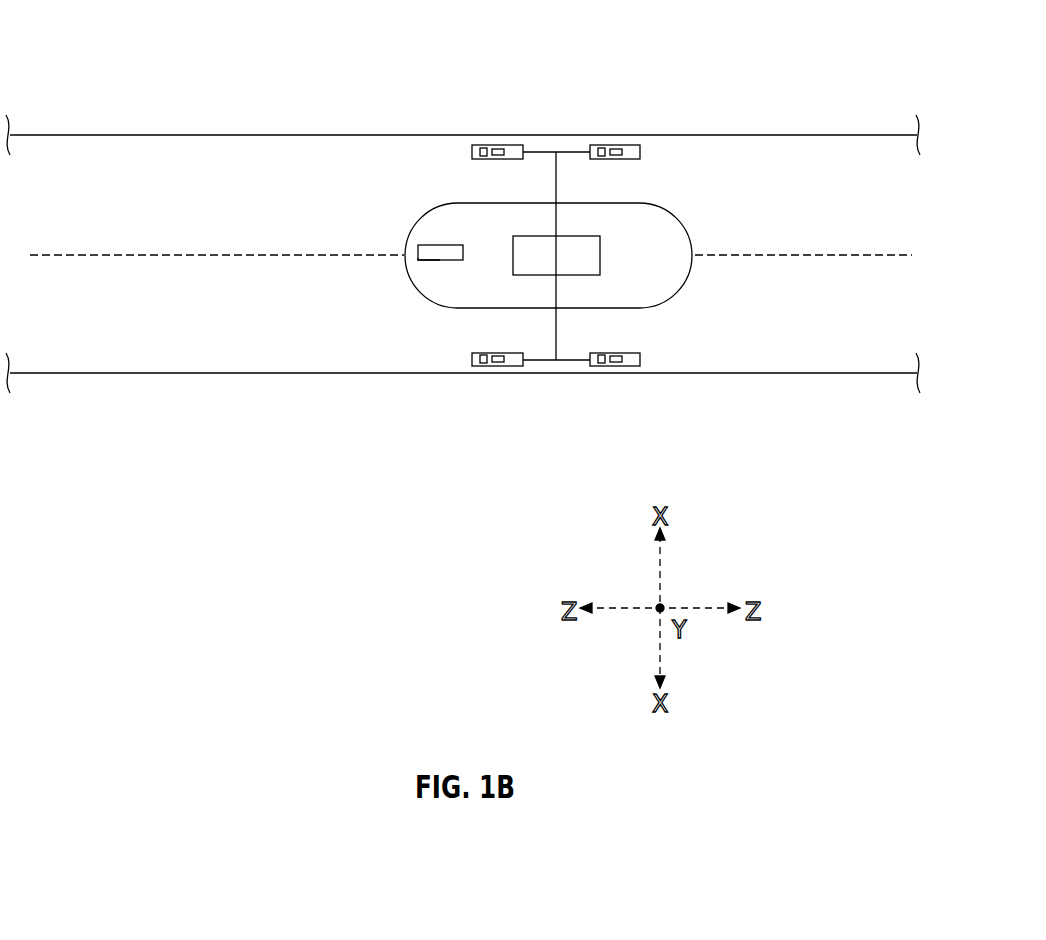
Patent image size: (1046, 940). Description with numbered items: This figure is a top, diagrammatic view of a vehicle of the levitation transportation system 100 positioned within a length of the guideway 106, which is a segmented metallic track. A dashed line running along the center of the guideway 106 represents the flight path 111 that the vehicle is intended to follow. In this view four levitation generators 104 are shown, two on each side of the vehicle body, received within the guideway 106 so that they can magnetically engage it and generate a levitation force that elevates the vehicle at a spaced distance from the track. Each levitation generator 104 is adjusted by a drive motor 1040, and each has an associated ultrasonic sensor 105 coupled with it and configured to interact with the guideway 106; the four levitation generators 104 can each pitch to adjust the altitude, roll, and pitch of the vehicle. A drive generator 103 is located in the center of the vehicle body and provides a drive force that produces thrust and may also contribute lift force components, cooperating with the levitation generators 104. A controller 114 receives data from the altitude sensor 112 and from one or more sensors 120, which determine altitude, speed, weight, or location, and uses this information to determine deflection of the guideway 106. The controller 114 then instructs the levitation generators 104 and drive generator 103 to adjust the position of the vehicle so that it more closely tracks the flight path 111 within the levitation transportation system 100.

The levitation transportation system 100 is at (143, 38).
The drive generator 103 is at (600, 256).
The levitation generator 104 is at (472, 147).
The drive motor 1040 is at (483, 150).
The ultrasonic sensor 105 is at (498, 150).
The guideway 106 is at (238, 375).
The flight path 111 is at (226, 247).
The altitude sensor 112 is at (412, 262).
The controller 114 is at (418, 258).
The sensor 120 is at (418, 249).